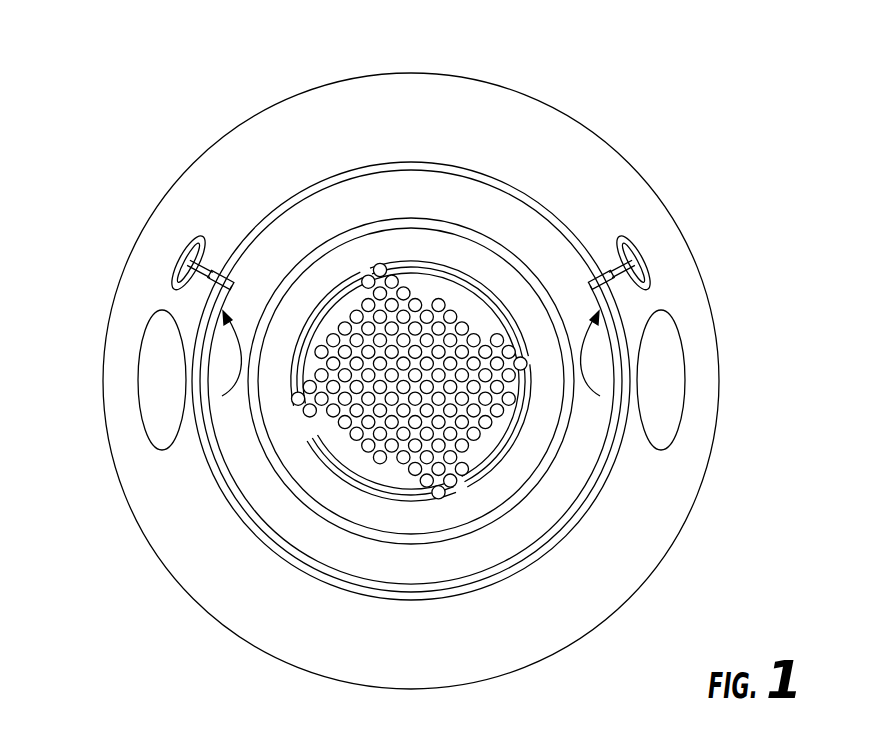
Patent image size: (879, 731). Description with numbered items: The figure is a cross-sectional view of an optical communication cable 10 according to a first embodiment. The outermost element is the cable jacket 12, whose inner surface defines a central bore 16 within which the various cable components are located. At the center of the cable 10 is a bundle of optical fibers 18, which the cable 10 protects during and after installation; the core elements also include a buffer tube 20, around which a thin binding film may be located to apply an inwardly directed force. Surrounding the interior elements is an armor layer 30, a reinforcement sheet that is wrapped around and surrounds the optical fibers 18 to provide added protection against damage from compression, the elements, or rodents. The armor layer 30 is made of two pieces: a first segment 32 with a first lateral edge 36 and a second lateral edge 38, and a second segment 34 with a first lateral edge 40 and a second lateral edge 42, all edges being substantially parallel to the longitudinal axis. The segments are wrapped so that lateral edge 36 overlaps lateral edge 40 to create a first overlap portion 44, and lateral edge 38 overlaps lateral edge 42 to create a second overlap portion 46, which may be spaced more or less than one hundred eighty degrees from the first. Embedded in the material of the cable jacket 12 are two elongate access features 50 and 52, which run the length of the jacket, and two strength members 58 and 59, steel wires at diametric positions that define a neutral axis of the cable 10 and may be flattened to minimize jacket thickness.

The cable 10 is at (780, 101).
The cable jacket 12 is at (630, 586).
The central bore 16 is at (422, 240).
The optical fibers 18 is at (480, 325).
The buffer tube 20 is at (565, 493).
The armor layer 30 is at (503, 588).
The first segment 32 is at (334, 178).
The second segment 34 is at (258, 546).
The first lateral edge 36 is at (196, 266).
The second lateral edge 38 is at (614, 284).
The first lateral edge 40 is at (184, 244).
The second lateral edge 42 is at (640, 256).
The first overlap portion 44 is at (222, 396).
The second overlap portion 46 is at (606, 401).
The access feature 50 is at (208, 284).
The access feature 52 is at (640, 262).
The strength member 58 is at (662, 368).
The strength member 59 is at (160, 363).